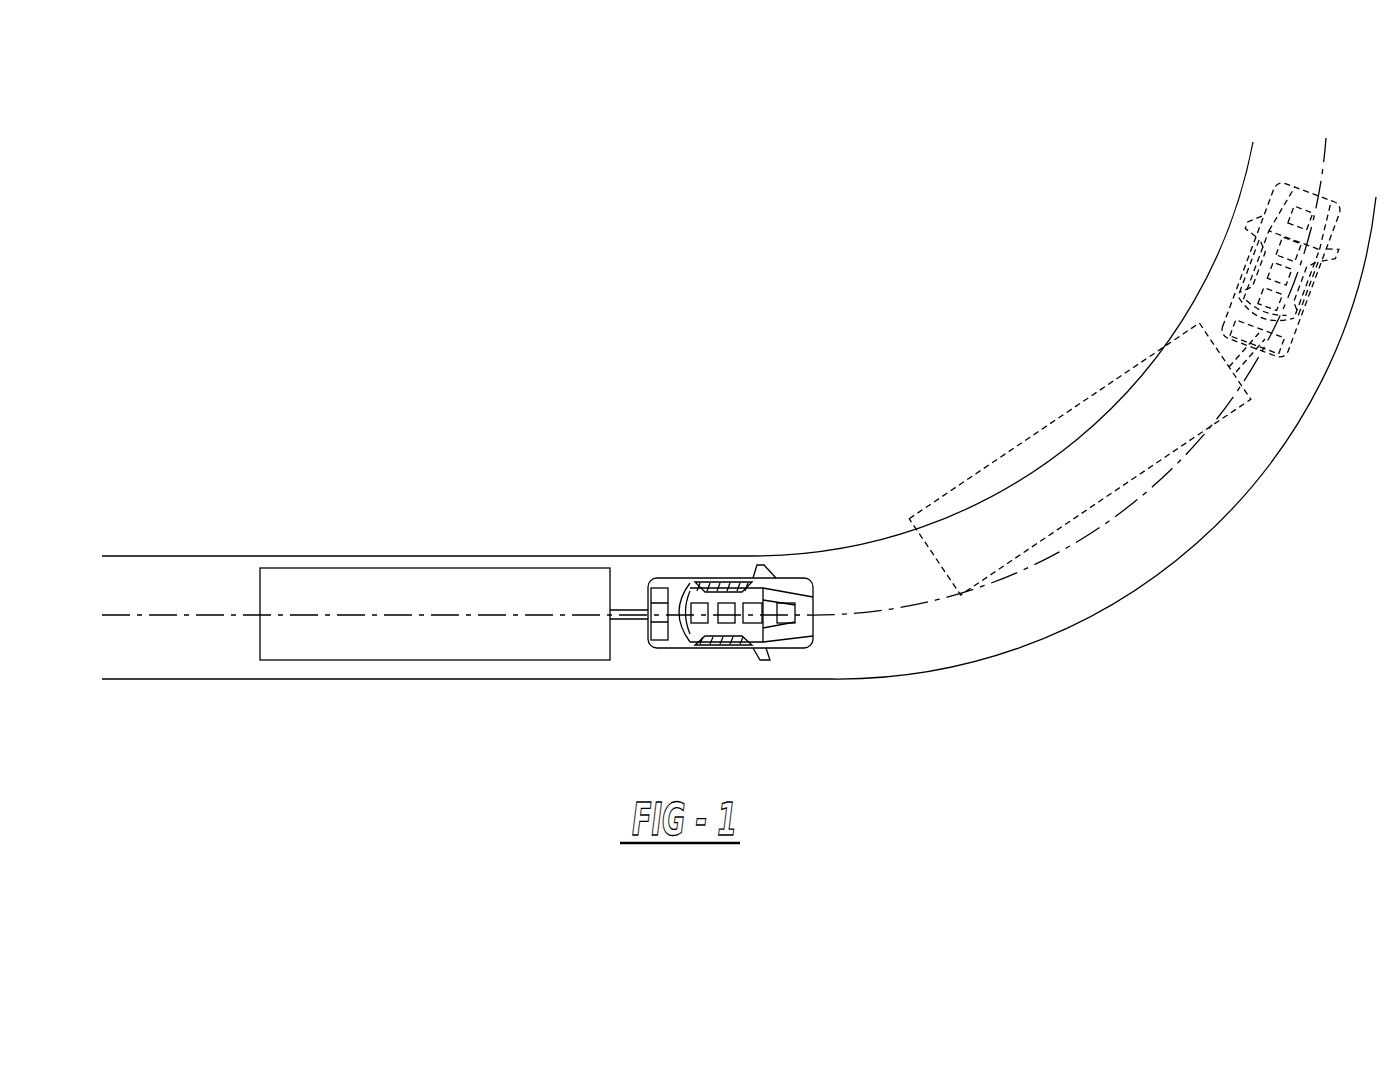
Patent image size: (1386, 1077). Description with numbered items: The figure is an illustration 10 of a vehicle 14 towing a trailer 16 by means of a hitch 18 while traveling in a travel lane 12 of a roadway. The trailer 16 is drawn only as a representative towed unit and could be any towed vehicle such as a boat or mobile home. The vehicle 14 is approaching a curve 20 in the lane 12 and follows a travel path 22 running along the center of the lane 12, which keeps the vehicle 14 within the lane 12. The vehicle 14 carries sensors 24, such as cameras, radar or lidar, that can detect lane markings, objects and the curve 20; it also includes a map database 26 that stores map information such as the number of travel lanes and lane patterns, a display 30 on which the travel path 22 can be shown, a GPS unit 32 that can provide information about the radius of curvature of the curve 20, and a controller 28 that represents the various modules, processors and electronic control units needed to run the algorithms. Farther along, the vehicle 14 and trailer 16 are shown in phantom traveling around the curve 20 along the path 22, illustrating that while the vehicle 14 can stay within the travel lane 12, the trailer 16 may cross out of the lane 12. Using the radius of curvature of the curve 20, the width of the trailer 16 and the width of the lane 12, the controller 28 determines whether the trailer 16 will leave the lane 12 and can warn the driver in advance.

The illustration 10 is at (774, 295).
The travel lane 12 is at (858, 545).
The vehicle 14 is at (735, 608).
The trailer 16 is at (430, 568).
The hitch 18 is at (641, 612).
The curve 20 is at (1160, 567).
The travel path 22 is at (185, 615).
The sensors 24 is at (792, 624).
The map database 26 is at (750, 624).
The controller 28 is at (727, 624).
The display 30 is at (656, 648).
The GPS unit 32 is at (700, 624).